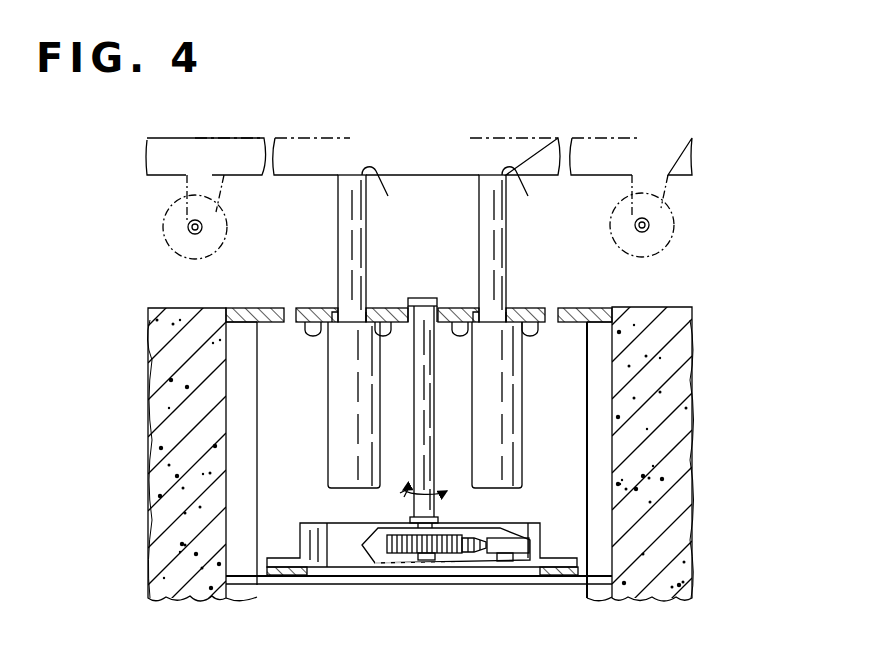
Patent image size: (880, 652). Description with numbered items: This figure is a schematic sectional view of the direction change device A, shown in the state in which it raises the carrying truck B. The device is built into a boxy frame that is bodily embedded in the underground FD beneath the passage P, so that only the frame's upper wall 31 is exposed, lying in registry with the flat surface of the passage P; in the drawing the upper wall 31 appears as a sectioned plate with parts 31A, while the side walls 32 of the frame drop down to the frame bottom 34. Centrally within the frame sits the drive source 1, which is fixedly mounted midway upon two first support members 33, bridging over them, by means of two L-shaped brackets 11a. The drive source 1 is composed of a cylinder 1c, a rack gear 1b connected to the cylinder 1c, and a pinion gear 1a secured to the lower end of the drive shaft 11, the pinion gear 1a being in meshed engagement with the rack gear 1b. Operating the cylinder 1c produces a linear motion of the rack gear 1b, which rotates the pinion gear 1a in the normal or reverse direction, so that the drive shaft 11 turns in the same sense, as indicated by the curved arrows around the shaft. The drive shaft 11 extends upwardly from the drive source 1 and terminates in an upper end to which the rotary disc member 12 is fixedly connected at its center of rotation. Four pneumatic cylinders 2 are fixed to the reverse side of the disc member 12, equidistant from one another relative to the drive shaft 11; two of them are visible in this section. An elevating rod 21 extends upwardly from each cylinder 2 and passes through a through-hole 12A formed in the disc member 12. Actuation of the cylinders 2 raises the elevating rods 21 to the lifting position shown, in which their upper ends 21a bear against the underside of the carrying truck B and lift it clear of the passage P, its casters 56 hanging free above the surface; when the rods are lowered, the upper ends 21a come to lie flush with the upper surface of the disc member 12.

The drive source 1 is at (352, 548).
The pinion gear 1a is at (425, 560).
The rack gear 1b is at (474, 555).
The cylinder 1c is at (510, 558).
The pneumatic cylinder 2 is at (328, 437).
The drive shaft 11 is at (433, 365).
The L-shaped bracket 11a is at (300, 548).
The rotary disc member 12 is at (452, 306).
The through-hole 12A is at (367, 306).
The elevating rod 21 is at (338, 224).
The upper end of elevating rod 21a is at (469, 196).
The upper wall 31 is at (570, 308).
The cover plate fastener 31A is at (286, 323).
The pit side wall 32 is at (257, 479).
The first support member 33 is at (286, 576).
The pit floor 34 is at (503, 584).
The caster wheel 56 is at (166, 222).
The direction change device A is at (280, 308).
The carrying truck B is at (553, 138).
The passage P is at (186, 315).
The underground FD is at (678, 496).